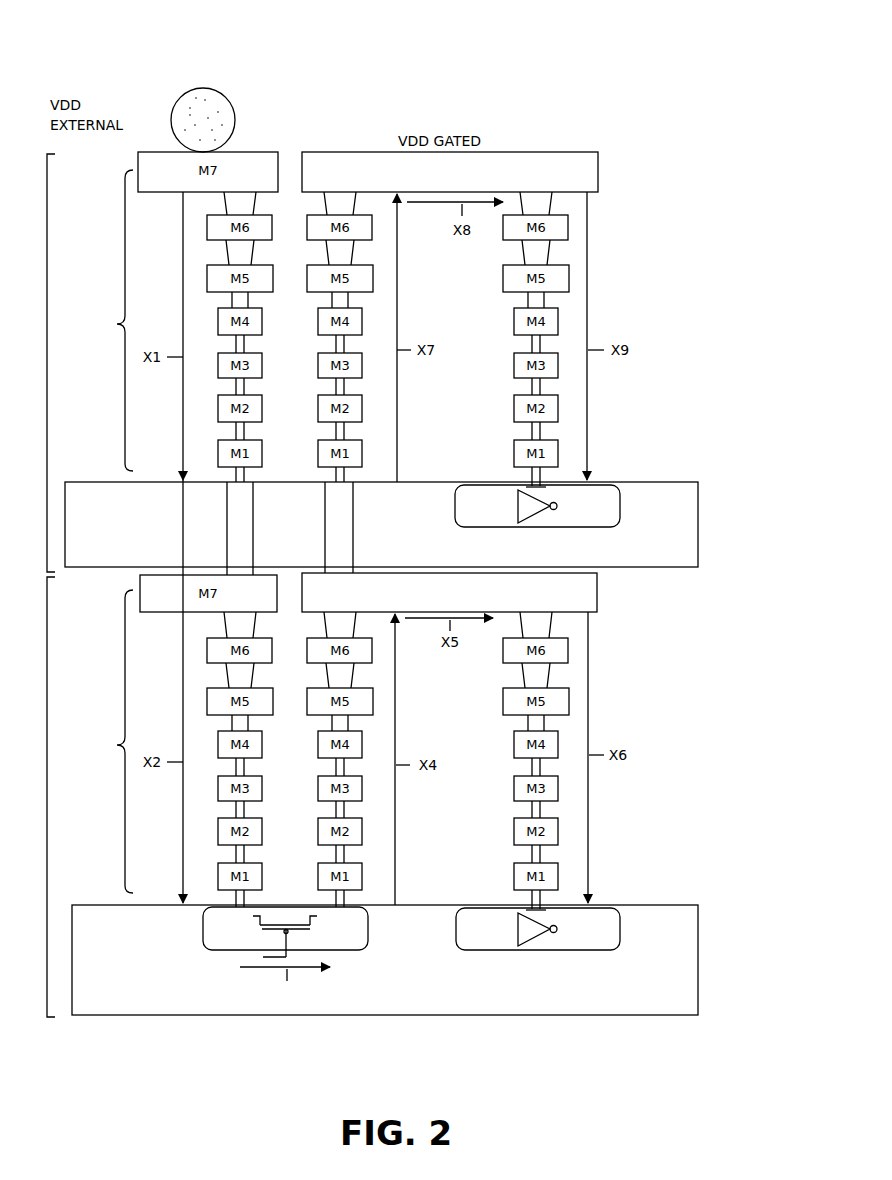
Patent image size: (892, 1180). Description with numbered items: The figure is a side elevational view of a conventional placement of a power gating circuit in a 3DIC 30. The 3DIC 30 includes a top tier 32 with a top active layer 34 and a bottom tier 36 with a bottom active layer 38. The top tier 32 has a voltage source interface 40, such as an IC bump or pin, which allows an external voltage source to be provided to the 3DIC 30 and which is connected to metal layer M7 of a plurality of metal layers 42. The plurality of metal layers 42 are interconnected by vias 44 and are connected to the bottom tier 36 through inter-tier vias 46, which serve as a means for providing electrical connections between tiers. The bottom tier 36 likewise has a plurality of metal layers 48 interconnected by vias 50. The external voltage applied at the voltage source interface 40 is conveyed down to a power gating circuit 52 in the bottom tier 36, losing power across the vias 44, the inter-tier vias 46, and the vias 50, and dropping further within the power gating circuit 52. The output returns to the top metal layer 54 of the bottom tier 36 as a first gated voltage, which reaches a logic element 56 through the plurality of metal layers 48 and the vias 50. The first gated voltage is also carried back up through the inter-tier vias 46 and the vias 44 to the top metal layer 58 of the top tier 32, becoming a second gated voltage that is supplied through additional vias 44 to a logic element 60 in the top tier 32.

The 3DIC 30 is at (533, 70).
The top tier 32 is at (47, 359).
The top active layer 34 is at (700, 516).
The bottom tier 36 is at (47, 783).
The bottom active layer 38 is at (700, 930).
The voltage source interface 40 is at (218, 90).
The plurality of metal layers 42 is at (112, 320).
The vias 44 is at (262, 196).
The inter-tier vias 46 is at (253, 527).
The plurality of metal layers 48 is at (112, 741).
The vias 50 is at (262, 619).
The power gating circuit 52 is at (203, 936).
The top metal layer 54 is at (600, 596).
The logic element 56 is at (600, 906).
The top metal layer 58 is at (598, 160).
The logic element 60 is at (600, 483).